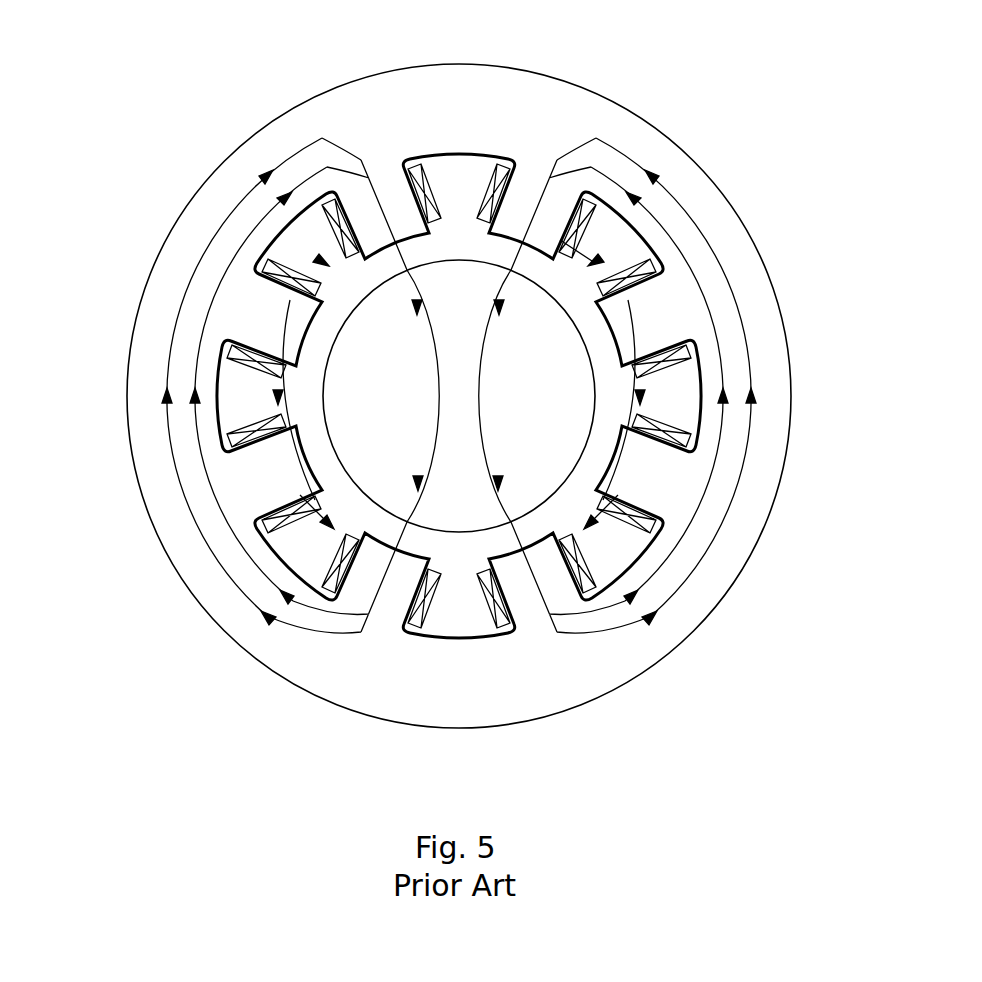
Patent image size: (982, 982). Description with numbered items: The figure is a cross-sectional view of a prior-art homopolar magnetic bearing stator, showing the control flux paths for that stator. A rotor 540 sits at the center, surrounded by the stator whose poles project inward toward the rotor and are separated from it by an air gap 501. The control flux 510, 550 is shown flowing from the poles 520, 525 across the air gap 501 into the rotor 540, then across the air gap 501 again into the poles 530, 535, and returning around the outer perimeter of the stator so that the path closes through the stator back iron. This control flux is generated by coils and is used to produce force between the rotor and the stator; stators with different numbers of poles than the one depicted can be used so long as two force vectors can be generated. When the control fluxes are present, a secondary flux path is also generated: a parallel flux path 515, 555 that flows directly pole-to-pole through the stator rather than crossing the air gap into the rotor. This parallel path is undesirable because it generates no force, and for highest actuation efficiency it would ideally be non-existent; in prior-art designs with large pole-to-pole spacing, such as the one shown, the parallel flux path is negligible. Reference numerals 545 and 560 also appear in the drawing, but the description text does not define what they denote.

The air gap 501 is at (603, 347).
The control flux 510 is at (350, 135).
The parallel flux path 515 is at (320, 261).
The pole 520 is at (397, 193).
The pole 525 is at (523, 193).
The pole 530 is at (385, 612).
The pole 535 is at (522, 605).
The rotor 540 is at (355, 447).
The tooth tip 545 is at (317, 308).
The control flux 550 is at (600, 281).
The parallel flux path 555 is at (640, 212).
The flux path 560 is at (500, 553).